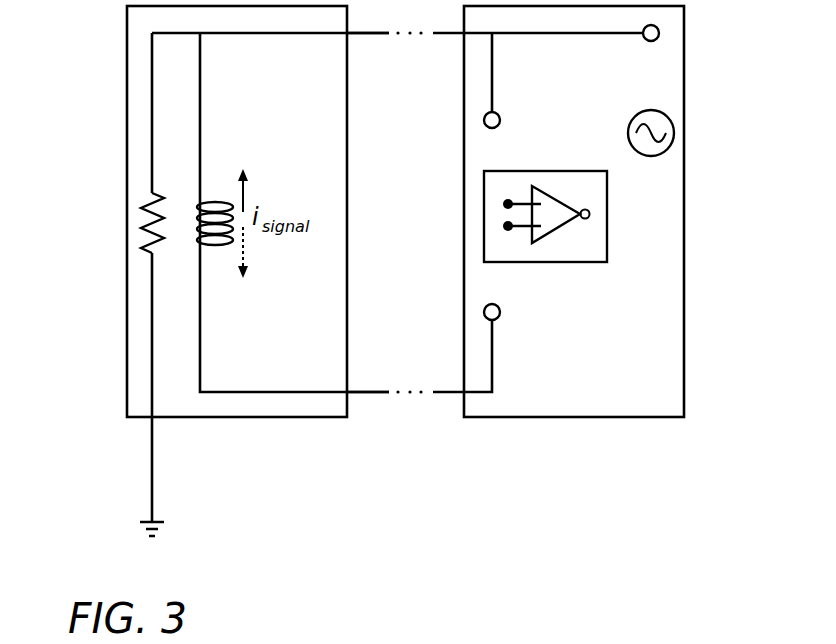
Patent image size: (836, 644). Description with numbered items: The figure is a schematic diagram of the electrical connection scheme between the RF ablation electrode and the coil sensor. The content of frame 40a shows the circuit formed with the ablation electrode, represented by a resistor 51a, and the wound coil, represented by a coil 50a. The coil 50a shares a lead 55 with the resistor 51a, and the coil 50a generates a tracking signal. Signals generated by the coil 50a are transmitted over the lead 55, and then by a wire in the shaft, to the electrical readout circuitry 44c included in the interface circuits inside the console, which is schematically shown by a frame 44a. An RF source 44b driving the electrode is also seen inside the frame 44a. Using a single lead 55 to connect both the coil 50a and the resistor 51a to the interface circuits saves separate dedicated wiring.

The frame 40a is at (127, 333).
The resistor 51a is at (141, 210).
The coil 50a is at (220, 247).
The lead 55 is at (362, 34).
The frame 44a is at (683, 283).
The AC signal source 44b is at (676, 133).
The electrical readout circuitry 44c is at (607, 216).